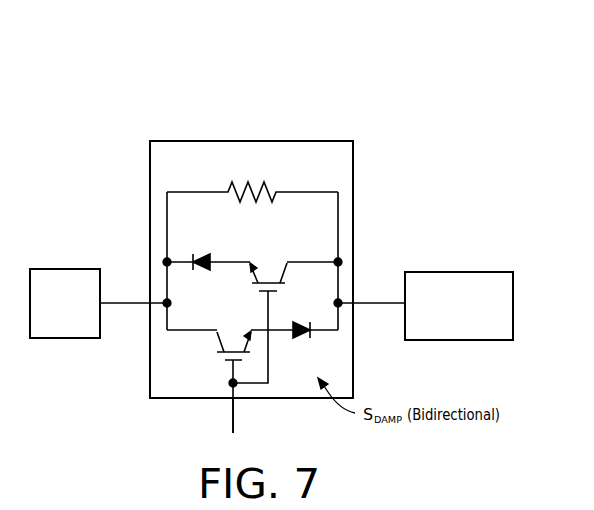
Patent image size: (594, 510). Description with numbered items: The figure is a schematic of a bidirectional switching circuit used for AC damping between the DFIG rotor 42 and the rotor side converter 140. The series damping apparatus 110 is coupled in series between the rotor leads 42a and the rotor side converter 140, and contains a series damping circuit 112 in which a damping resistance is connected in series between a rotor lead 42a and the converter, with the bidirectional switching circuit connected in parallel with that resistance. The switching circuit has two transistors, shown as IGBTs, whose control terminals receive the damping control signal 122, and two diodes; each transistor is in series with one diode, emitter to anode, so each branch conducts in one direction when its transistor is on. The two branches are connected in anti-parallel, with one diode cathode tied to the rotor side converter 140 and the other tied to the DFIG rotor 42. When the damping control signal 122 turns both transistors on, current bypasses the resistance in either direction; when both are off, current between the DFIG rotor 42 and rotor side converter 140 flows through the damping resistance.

The series damping apparatus 110 is at (254, 141).
The series damping circuit 112 is at (175, 184).
The DFIG rotor 42 is at (62, 268).
The rotor leads 42a is at (118, 269).
The rotor side converter 140 is at (457, 272).
The damping control signal 122 is at (232, 414).